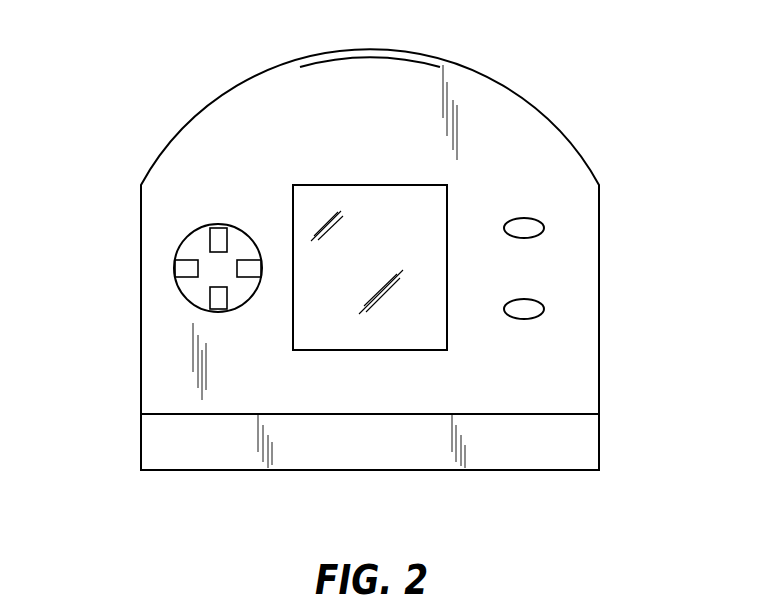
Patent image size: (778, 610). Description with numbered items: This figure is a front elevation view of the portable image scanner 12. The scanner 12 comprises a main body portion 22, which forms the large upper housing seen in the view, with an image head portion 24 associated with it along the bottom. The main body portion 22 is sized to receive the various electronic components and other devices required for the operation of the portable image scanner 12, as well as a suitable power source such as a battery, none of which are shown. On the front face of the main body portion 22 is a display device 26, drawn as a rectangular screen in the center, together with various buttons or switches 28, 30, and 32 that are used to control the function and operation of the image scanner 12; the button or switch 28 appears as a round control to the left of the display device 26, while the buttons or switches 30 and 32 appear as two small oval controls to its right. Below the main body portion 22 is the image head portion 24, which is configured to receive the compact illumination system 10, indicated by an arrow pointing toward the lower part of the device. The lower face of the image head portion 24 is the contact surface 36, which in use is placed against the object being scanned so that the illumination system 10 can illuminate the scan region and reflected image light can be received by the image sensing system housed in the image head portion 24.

The compact illumination system 10 is at (523, 488).
The portable image scanner 12 is at (157, 65).
The main body portion 22 is at (370, 50).
The image head portion 24 is at (600, 445).
The display device 26 is at (371, 185).
The button or switch 28 is at (236, 224).
The button or switch 30 is at (522, 218).
The button or switch 32 is at (525, 320).
The contact surface 36 is at (165, 470).